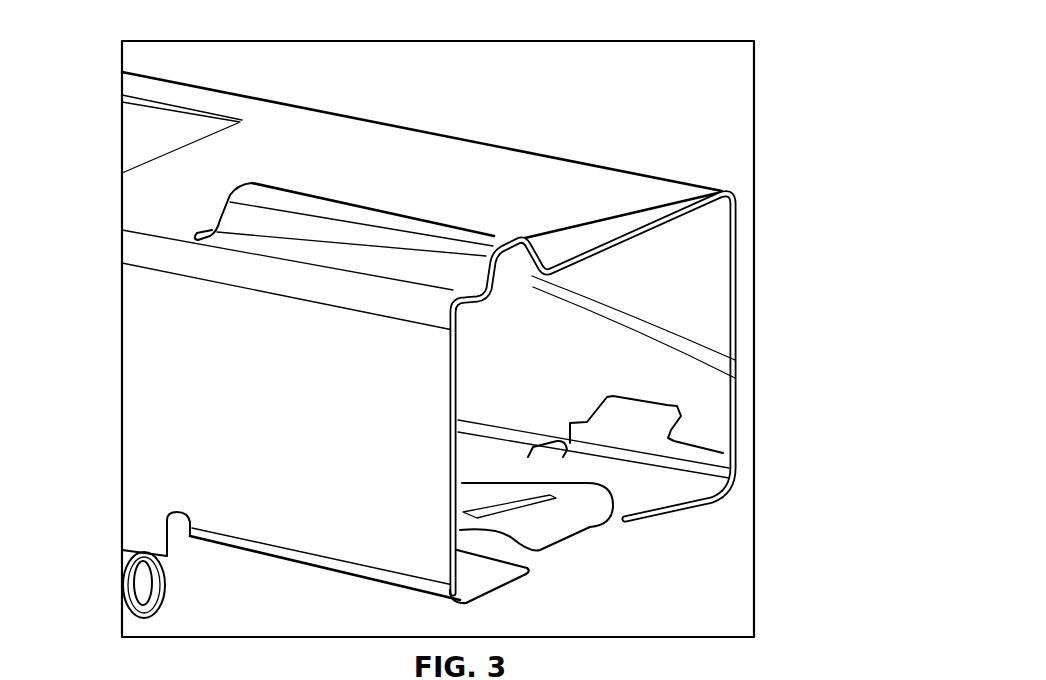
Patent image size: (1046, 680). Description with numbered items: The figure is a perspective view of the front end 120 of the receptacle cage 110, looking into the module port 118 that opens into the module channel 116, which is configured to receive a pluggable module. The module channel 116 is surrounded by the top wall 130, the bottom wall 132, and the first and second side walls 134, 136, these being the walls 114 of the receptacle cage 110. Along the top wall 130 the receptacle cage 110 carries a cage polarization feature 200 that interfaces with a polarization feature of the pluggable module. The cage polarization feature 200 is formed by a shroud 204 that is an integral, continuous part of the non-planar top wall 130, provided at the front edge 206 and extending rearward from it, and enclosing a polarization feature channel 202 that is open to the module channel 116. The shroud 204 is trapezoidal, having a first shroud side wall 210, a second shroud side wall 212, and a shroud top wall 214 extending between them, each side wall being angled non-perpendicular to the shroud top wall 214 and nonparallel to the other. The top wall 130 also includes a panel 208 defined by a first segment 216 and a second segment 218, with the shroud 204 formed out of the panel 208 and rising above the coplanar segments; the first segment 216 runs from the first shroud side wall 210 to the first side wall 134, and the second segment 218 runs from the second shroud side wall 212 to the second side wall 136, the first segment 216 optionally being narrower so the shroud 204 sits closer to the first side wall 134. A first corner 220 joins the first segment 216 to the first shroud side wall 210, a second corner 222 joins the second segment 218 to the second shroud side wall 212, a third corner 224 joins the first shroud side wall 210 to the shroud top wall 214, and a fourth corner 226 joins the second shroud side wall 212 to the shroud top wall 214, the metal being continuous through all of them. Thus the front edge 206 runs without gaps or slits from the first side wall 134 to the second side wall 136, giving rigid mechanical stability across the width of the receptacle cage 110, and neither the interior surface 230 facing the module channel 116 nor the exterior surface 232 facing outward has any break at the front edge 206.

The receptacle cage 110 is at (322, 75).
The walls 114 is at (716, 297).
The module channel 116 is at (708, 407).
The module port 118 is at (741, 448).
The front end 120 is at (733, 351).
The top wall 130 is at (557, 177).
The bottom wall 132 is at (647, 505).
The first side wall 134 is at (352, 523).
The second side wall 136 is at (716, 238).
The cage polarization feature 200 is at (376, 192).
The polarization feature channel 202 is at (735, 360).
The shroud 204 is at (735, 378).
The front edge 206 is at (713, 254).
The panel 208 is at (492, 243).
The first shroud side wall 210 is at (416, 258).
The second shroud side wall 212 is at (698, 193).
The shroud top wall 214 is at (492, 173).
The first segment 216 is at (367, 273).
The second segment 218 is at (627, 198).
The first corner 220 is at (510, 317).
The second corner 222 is at (512, 281).
The third corner 224 is at (522, 237).
The fourth corner 226 is at (527, 235).
The interior surface 230 is at (716, 229).
The exterior surface 232 is at (698, 197).